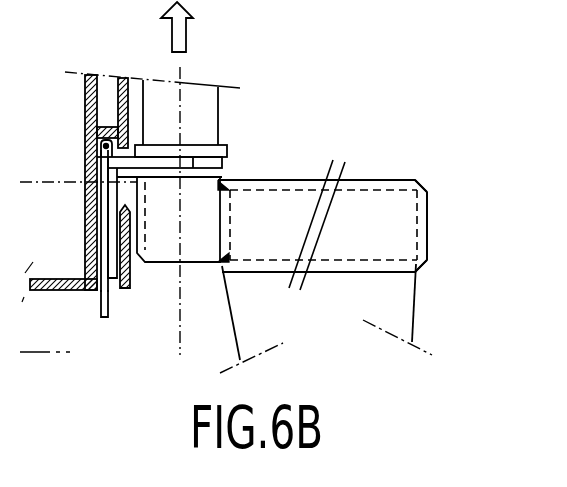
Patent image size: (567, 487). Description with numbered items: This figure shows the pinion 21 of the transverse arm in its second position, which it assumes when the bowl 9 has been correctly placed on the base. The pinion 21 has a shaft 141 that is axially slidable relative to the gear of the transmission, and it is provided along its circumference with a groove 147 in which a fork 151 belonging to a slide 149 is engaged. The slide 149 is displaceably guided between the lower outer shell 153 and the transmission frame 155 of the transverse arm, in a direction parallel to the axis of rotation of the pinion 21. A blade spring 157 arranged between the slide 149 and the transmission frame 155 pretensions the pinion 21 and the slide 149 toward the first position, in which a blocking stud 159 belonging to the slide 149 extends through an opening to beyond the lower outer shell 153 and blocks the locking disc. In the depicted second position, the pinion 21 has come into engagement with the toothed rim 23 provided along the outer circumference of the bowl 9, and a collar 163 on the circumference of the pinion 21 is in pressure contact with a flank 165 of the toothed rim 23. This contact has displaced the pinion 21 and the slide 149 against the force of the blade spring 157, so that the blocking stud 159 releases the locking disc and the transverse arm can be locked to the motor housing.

The bowl 9 is at (393, 298).
The pinion 21 is at (167, 250).
The toothed rim 23 is at (395, 218).
The shaft 141 is at (205, 108).
The groove 147 is at (228, 160).
The slide 149 is at (108, 227).
The fork 151 is at (158, 162).
The lower outer shell 153 is at (122, 292).
The transmission frame 155 is at (85, 112).
The blade spring 157 is at (101, 153).
The blocking stud 159 is at (101, 310).
The collar 163 is at (226, 173).
The flank 165 is at (378, 180).